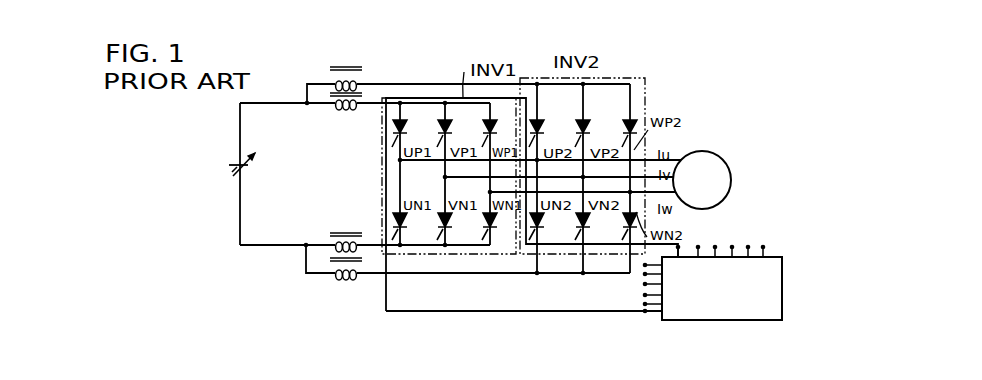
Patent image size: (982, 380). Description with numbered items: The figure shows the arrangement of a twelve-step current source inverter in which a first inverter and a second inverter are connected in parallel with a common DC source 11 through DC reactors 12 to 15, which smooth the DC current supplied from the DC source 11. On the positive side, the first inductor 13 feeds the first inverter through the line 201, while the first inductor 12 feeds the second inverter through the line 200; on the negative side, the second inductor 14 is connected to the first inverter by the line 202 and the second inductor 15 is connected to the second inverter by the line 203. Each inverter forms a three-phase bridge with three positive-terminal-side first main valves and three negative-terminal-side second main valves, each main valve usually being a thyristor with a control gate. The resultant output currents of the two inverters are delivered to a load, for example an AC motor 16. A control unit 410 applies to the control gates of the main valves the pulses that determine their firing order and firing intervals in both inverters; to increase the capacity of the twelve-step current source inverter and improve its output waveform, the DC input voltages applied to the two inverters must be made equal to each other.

The DC source 11 is at (229, 165).
The first inductor 12 is at (362, 69).
The first inductor 13 is at (335, 107).
The second inductor 14 is at (333, 235).
The second inductor 15 is at (335, 275).
The AC motor 16 is at (699, 151).
The line 200 is at (409, 84).
The line 201 is at (365, 107).
The line 202 is at (375, 243).
The line 203 is at (370, 277).
The control unit 410 is at (783, 272).